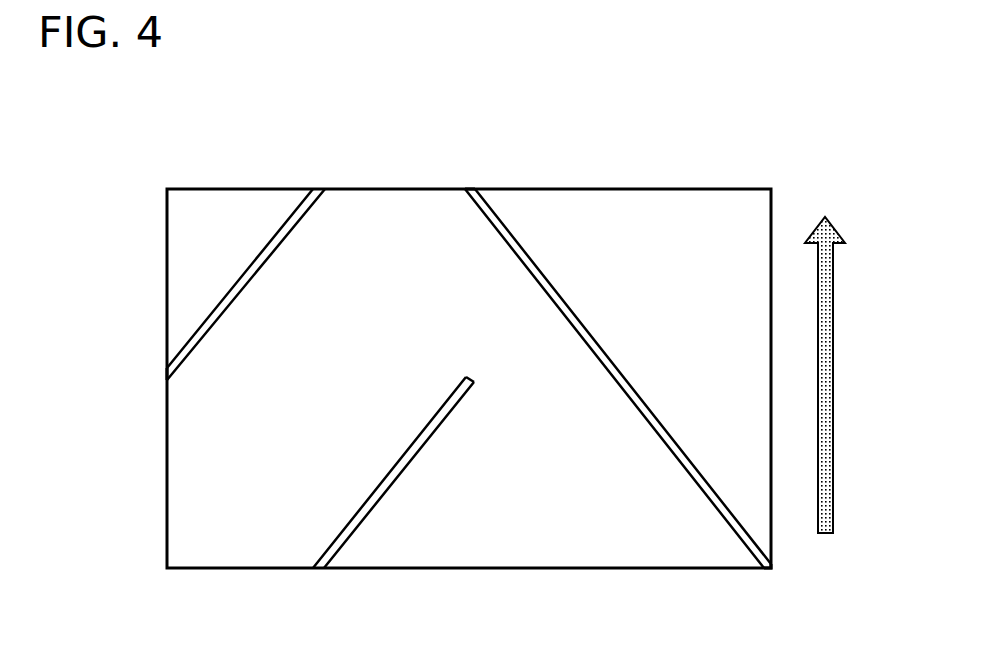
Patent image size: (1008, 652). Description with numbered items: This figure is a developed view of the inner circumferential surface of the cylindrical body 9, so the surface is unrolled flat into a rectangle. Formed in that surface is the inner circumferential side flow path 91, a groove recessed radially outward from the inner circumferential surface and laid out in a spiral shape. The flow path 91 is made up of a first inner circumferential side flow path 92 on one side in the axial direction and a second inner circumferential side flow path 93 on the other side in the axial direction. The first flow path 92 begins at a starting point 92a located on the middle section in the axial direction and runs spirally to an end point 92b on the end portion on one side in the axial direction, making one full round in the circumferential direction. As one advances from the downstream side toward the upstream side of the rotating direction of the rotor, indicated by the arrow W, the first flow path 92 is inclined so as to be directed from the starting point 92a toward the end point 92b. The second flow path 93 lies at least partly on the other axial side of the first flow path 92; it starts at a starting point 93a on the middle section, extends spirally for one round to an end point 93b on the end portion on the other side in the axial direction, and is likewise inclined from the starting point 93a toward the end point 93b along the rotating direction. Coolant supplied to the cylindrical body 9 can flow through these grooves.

The cylindrical body 9 is at (643, 168).
The inner circumferential side flow path 91 is at (469, 371).
The first inner circumferential side flow path 92 is at (576, 320).
The second inner circumferential side flow path 93 is at (265, 262).
The starting point of the first inner circumferential side flow path 92a is at (467, 190).
The end point of the first inner circumferential side flow path 92b is at (771, 566).
The starting point of the second inner circumferential side flow path 93a is at (470, 377).
The end point of the second inner circumferential side flow path 93b is at (165, 378).
The arrow indicating rotating direction of the rotor W is at (834, 423).